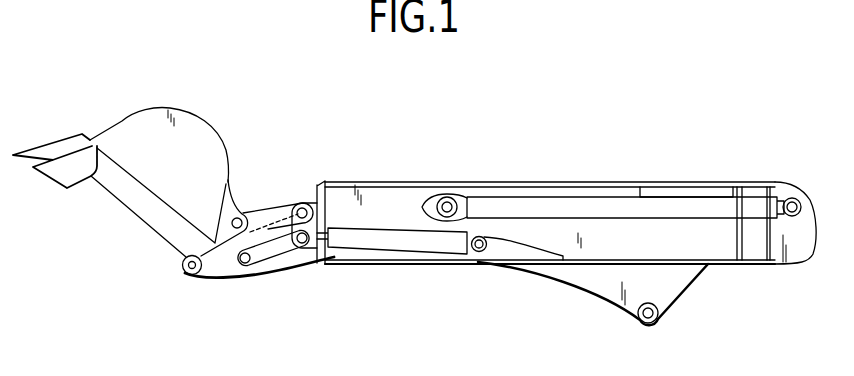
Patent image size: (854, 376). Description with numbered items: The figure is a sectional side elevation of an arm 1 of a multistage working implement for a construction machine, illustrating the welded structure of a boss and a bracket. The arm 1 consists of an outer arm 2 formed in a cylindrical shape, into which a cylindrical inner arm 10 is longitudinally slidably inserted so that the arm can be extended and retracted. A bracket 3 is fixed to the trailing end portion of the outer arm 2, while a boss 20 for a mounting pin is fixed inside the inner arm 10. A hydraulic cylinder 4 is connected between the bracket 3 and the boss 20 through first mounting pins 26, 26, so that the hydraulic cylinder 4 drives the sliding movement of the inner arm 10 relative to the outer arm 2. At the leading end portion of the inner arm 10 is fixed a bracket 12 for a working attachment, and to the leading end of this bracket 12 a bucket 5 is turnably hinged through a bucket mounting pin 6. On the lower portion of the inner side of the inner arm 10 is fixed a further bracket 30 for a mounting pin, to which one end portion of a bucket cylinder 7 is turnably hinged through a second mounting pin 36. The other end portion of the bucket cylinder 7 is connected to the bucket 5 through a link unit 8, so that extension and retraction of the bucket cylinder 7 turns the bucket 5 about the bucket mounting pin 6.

The arm 1 is at (493, 86).
The inner arm 10 is at (525, 182).
The outer arm 2 is at (587, 182).
The bracket 3 is at (796, 256).
The hydraulic cylinder 4 is at (643, 196).
The boss for a mounting pin 20 is at (428, 197).
The first mounting pins 26 is at (450, 197).
The bucket cylinder 7 is at (393, 250).
The second mounting pin 36 is at (480, 252).
The bracket for a mounting pin 30 is at (505, 256).
The bracket for a working attachment 12 is at (230, 274).
The link unit 8 is at (290, 243).
The bucket mounting pin 6 is at (189, 276).
The bucket 5 is at (200, 132).